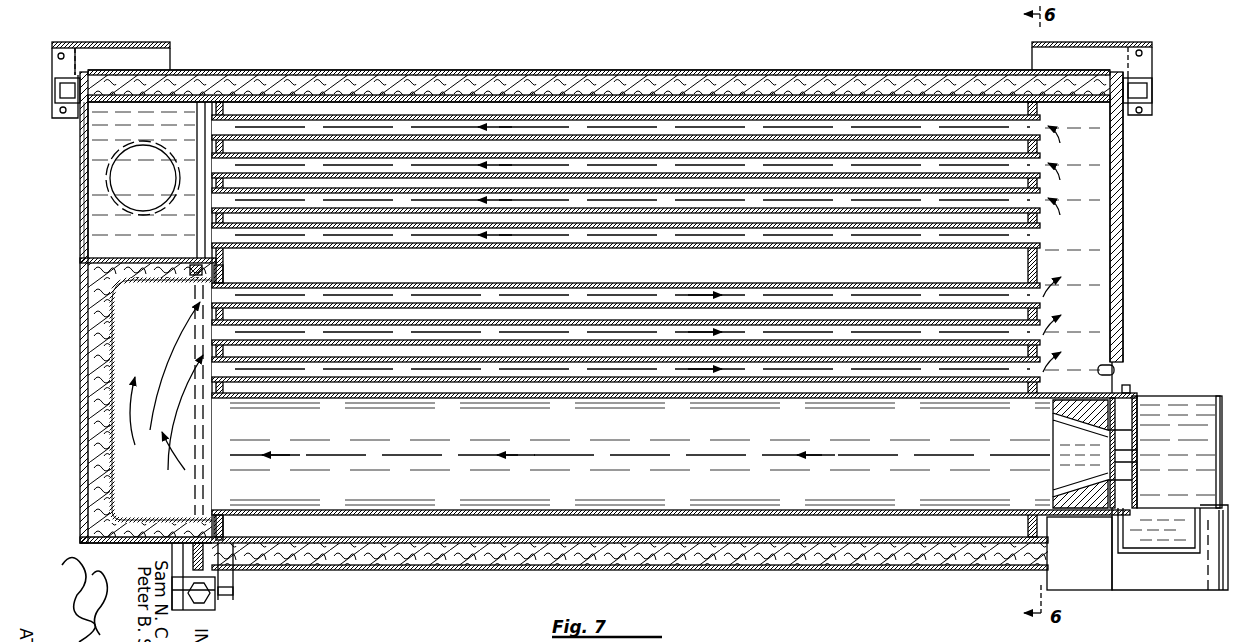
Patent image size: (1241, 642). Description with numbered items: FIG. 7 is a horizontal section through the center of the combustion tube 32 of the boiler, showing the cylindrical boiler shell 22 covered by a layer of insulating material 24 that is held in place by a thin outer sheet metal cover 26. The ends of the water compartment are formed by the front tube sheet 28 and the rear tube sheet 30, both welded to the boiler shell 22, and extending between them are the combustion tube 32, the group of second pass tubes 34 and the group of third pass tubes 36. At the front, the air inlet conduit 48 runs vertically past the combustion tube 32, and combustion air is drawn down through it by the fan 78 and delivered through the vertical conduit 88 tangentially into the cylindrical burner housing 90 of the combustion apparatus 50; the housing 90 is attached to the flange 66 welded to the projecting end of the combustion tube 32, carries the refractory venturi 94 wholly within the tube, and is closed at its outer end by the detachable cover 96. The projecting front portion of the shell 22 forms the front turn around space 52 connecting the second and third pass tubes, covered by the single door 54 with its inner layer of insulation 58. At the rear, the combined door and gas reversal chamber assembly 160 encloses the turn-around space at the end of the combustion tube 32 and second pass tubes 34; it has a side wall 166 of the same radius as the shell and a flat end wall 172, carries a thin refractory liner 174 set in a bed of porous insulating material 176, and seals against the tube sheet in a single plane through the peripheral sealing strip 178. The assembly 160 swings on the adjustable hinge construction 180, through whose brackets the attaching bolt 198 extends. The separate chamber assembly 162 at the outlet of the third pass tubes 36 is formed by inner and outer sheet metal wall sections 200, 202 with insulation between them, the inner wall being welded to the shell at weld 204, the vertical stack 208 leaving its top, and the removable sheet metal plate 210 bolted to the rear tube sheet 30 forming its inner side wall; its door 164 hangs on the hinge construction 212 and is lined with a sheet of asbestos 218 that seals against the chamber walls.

The boiler shell 22 is at (637, 80).
The layer of insulating material 24 is at (784, 85).
The outer sheet metal cover 26 is at (847, 85).
The front tube sheet 28 is at (1034, 265).
The rear tube sheet 30 is at (222, 260).
The combustion tube 32 is at (553, 510).
The second pass tubes 34 is at (770, 326).
The third pass tubes 36 is at (394, 126).
The air inlet conduit 48 is at (1078, 580).
The combustion apparatus 50 is at (1153, 391).
The front turn around space 52 is at (1117, 215).
The door 54 is at (1117, 280).
The layer of insulation 58 is at (1117, 158).
The flange 66 is at (1106, 375).
The fan 78 is at (1160, 583).
The vertical conduit 88 is at (1161, 506).
The burner housing 90 is at (1198, 397).
The refractory venturi 94 is at (1060, 488).
The cover 96 is at (1212, 428).
The combined door and gas reversal chamber assembly 160 is at (78, 442).
The chamber assembly 162 is at (189, 67).
The door 164 is at (78, 170).
The side wall 166 is at (130, 545).
The end wall 172 is at (82, 360).
The refractory liner 174 is at (117, 478).
The insulating material 176 is at (92, 500).
The peripheral sealing strip 178 is at (220, 283).
The hinge construction 180 is at (208, 608).
The attaching bolt 198 is at (170, 575).
The inner sheet metal wall section 200 is at (108, 104).
The outer sheet metal wall section 202 is at (146, 56).
The weld 204 is at (214, 90).
The vertical stack 208 is at (172, 200).
The sheet metal plate 210 is at (150, 248).
The hinge construction 212 is at (44, 103).
The sheet of asbestos 218 is at (85, 205).